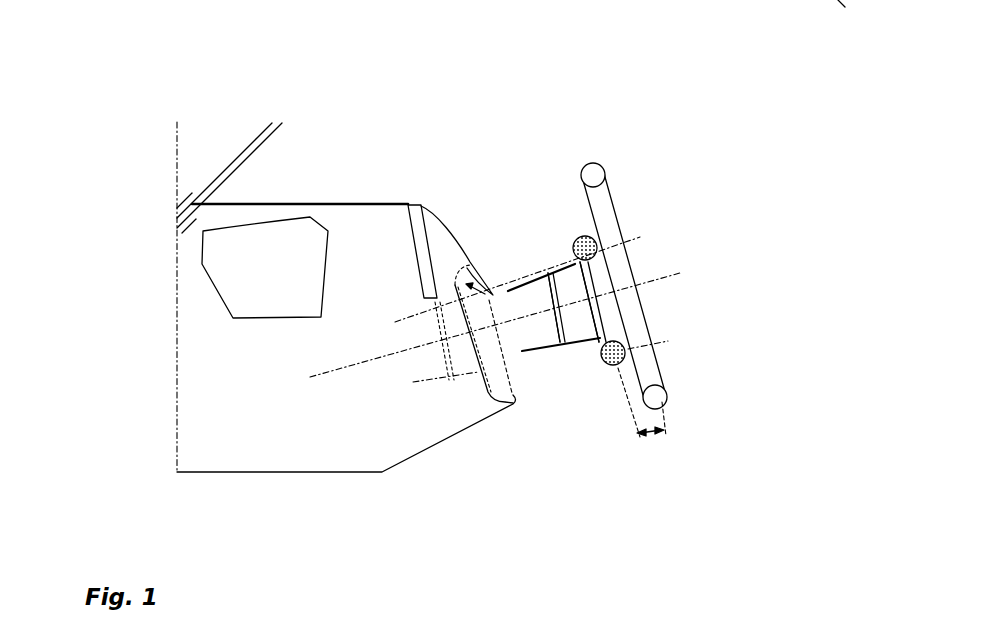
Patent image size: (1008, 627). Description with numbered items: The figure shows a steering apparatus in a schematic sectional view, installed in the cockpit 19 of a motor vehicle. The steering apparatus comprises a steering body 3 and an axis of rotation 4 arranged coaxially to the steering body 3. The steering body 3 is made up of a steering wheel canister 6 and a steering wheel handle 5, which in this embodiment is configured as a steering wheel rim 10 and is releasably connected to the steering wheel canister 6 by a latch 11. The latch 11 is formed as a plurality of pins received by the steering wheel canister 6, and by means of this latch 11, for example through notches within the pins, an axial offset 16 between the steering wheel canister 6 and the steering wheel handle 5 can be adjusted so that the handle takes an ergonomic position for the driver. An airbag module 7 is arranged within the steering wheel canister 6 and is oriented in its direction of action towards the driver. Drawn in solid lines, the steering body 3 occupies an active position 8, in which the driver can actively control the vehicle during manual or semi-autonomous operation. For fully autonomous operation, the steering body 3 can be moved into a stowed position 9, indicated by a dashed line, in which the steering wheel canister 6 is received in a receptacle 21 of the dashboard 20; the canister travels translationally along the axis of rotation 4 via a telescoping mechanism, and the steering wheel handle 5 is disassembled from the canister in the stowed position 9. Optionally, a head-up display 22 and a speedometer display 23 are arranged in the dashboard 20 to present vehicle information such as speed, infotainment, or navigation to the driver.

The steering body 3 is at (581, 427).
The axis of rotation 4 is at (340, 370).
The steering wheel handle 5 is at (648, 403).
The steering wheel canister 6 is at (602, 318).
The airbag module 7 is at (602, 318).
The active position 8 is at (636, 179).
The stowed position 9 is at (507, 340).
The steering wheel rim 10 is at (648, 403).
The latch 11 is at (597, 255).
The axial offset 16 is at (652, 435).
The cockpit 19 is at (418, 167).
The dashboard 20 is at (345, 213).
The receptacle 21 is at (445, 222).
The head-up display 22 is at (223, 300).
The speedometer display 23 is at (417, 213).